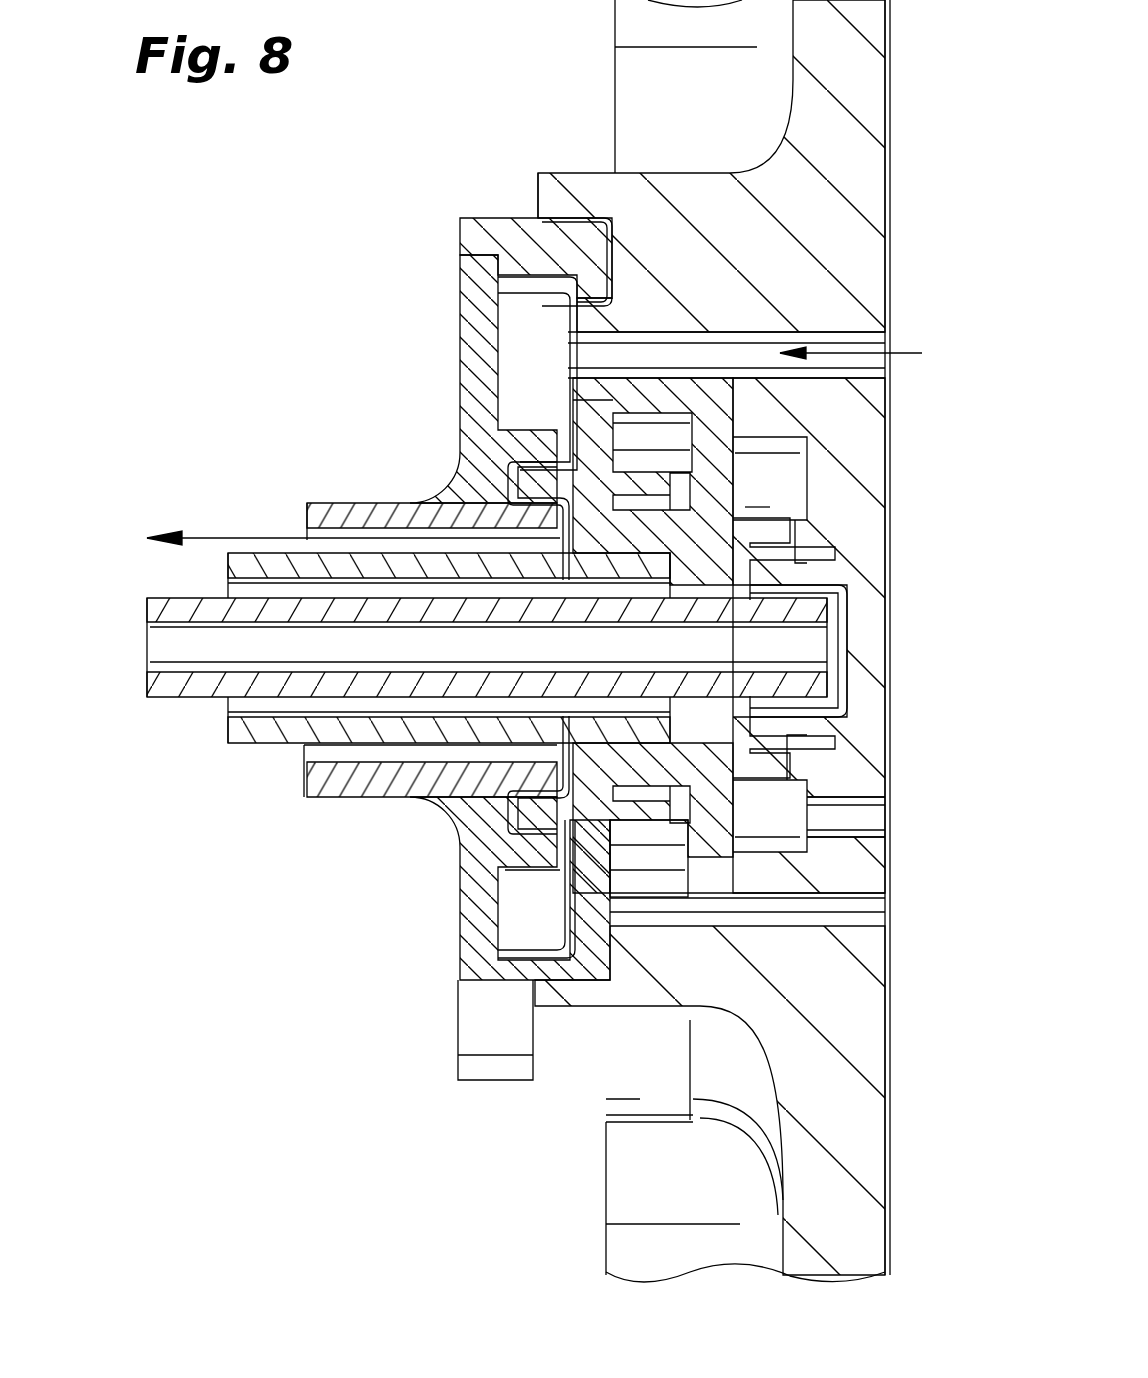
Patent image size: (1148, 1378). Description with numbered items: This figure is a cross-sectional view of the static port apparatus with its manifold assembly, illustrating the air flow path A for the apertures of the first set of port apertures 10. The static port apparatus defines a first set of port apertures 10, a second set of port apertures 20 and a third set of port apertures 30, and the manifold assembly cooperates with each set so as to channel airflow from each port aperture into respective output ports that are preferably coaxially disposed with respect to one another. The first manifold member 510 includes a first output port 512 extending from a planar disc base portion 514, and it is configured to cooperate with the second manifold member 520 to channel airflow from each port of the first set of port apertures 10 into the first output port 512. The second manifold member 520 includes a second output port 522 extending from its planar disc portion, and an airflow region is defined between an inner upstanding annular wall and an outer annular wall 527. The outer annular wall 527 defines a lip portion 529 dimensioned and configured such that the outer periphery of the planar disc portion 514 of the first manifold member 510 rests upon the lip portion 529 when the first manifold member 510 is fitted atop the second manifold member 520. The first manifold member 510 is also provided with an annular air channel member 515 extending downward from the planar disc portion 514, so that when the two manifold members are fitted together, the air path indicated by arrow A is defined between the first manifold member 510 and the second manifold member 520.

The first set of port apertures 10 is at (893, 370).
The second set of port apertures 20 is at (893, 908).
The third set of port apertures 30 is at (890, 816).
The first manifold member 510 is at (402, 500).
The first output port 512 is at (325, 503).
The planar disc base portion 514 is at (453, 300).
The annular air channel member 515 is at (535, 410).
The second manifold member 520 is at (236, 752).
The second output port 522 is at (505, 466).
The outer annular wall 527 is at (558, 237).
The lip portion 529 is at (515, 275).